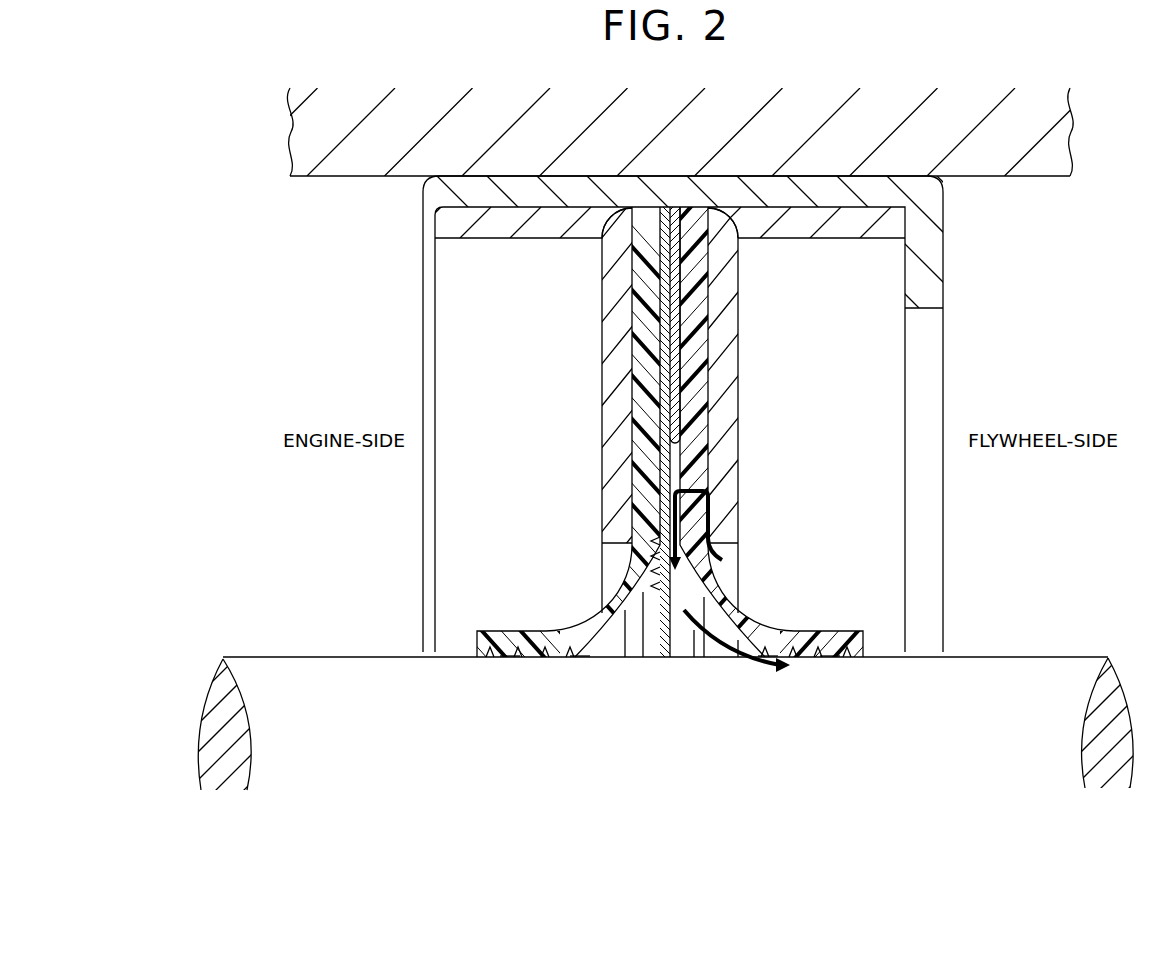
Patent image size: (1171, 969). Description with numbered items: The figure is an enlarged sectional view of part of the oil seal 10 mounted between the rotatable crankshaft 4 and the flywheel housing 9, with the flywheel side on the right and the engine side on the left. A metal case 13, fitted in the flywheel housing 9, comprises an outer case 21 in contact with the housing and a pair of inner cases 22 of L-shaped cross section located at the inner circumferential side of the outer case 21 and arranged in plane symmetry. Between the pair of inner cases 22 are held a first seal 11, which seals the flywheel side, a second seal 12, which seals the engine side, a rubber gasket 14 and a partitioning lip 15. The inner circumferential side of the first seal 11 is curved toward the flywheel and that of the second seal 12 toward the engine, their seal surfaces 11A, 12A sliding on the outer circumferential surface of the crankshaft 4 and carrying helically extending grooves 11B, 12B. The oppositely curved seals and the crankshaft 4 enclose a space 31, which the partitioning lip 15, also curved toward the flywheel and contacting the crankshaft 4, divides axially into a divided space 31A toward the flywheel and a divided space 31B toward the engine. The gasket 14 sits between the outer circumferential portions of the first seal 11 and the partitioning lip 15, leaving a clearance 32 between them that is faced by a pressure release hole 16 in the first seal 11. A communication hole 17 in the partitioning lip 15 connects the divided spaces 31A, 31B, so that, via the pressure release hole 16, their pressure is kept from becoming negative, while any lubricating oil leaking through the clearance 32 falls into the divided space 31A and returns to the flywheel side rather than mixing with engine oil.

The crankshaft 4 is at (300, 657).
The flywheel housing 9 is at (290, 128).
The oil seal 10 is at (394, 288).
The first seal 11 is at (812, 638).
The seal surface 11A is at (830, 657).
The groove 11B is at (768, 657).
The second seal 12 is at (510, 633).
The seal surface 12A is at (510, 657).
The groove 12B is at (580, 657).
The case 13 is at (1037, 222).
The gasket 14 is at (680, 385).
The partitioning lip 15 is at (665, 347).
The pressure release hole 16 is at (700, 490).
The communication hole 17 is at (655, 583).
The outer case 21 is at (933, 227).
The inner cases 22 is at (540, 228).
The space 31 is at (693, 714).
The divided space 31A is at (712, 657).
The divided space 31B is at (663, 657).
The clearance 32 is at (677, 453).